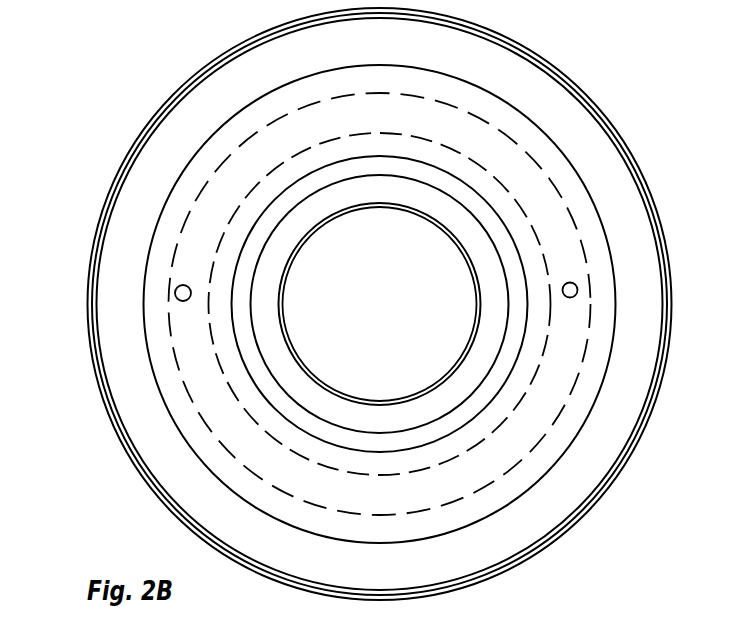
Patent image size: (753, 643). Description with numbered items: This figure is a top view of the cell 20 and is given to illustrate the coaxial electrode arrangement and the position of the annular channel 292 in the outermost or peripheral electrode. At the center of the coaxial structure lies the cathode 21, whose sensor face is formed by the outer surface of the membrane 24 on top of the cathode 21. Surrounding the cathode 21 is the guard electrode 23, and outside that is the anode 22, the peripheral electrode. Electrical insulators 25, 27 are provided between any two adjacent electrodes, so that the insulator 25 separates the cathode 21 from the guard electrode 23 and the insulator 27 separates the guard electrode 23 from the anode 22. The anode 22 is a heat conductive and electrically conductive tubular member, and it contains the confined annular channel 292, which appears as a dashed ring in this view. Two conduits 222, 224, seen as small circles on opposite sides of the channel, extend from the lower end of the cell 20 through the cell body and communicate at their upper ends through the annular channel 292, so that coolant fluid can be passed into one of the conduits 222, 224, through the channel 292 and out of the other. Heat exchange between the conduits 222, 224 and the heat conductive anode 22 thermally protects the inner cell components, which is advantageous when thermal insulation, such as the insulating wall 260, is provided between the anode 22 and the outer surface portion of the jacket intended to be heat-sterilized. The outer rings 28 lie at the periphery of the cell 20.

The cell 20 is at (620, 114).
The cathode 21 is at (388, 348).
The anode 22 is at (602, 358).
The guard electrode 23 is at (388, 418).
The membrane 24 is at (658, 245).
The electrical insulator 25 is at (398, 211).
The electrical insulator 27 is at (505, 238).
The outer rim 28 is at (653, 198).
The conduit 222 is at (577, 288).
The conduit 224 is at (177, 292).
The insulating wall 260 is at (648, 328).
The annular channel 292 is at (555, 193).